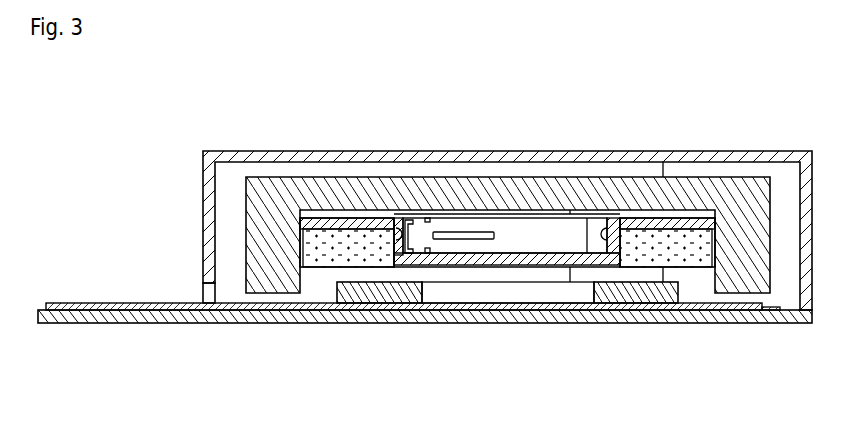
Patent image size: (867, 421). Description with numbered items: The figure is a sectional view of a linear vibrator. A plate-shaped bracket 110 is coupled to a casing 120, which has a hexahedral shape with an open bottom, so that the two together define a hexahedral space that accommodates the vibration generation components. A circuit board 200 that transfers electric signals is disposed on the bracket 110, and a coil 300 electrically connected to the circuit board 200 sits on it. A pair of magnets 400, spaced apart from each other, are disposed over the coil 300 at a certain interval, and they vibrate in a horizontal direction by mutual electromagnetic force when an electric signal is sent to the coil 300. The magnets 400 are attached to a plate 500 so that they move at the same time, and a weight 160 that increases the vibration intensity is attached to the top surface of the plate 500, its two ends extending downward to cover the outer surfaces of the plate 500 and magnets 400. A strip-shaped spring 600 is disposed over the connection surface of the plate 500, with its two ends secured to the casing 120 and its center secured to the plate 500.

The bracket 110 is at (100, 318).
The circuit board 200 is at (115, 303).
The casing 120 is at (718, 153).
The weight 160 is at (573, 182).
The coil 300 is at (594, 293).
The magnets 400 is at (325, 262).
The plate 500 is at (467, 260).
The spring 600 is at (505, 227).